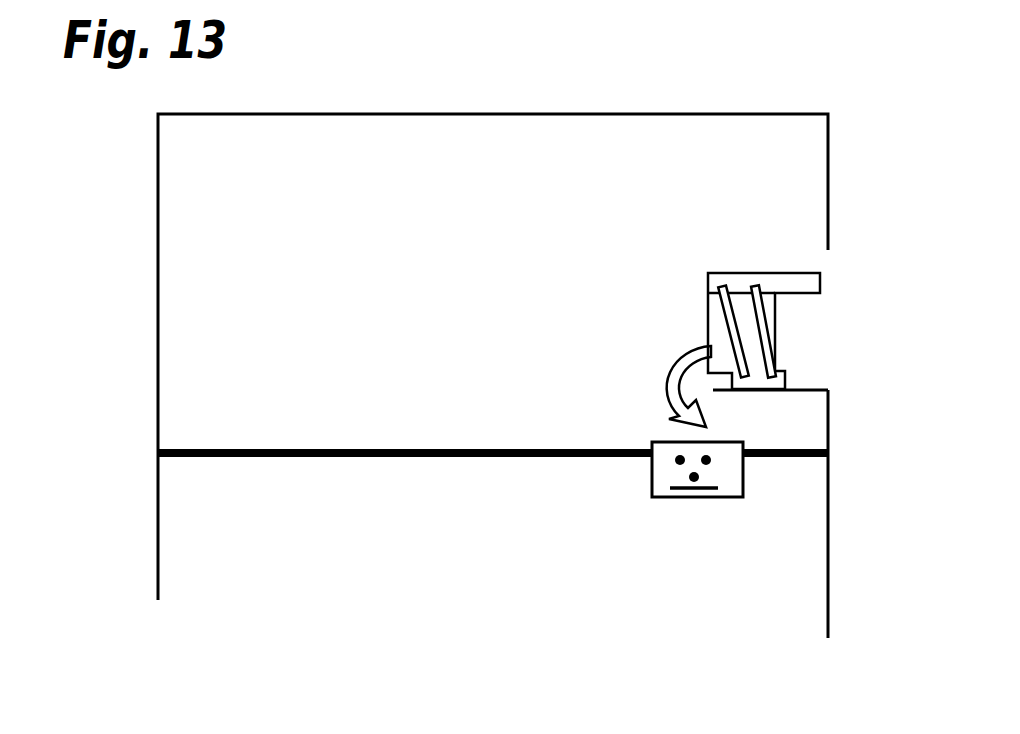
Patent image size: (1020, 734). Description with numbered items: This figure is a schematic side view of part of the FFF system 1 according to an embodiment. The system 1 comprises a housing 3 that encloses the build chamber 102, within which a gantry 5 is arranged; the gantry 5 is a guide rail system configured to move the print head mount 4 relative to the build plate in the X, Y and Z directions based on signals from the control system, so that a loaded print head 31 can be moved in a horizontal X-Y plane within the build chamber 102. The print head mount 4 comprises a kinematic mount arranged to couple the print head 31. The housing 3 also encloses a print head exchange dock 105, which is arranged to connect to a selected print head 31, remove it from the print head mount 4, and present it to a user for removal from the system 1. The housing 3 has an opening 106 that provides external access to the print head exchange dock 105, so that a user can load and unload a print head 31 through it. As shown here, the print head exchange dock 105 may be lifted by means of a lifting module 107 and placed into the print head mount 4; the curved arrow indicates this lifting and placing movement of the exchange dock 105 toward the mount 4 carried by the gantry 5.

The FFF system 1 is at (430, 376).
The housing 3 is at (632, 114).
The gantry 5 is at (332, 448).
The print head mount 4 is at (738, 490).
The build chamber 102 is at (450, 585).
The print head exchange dock 105 is at (728, 275).
The print head 31 is at (775, 312).
The opening 106 is at (834, 261).
The lifting module 107 is at (678, 324).